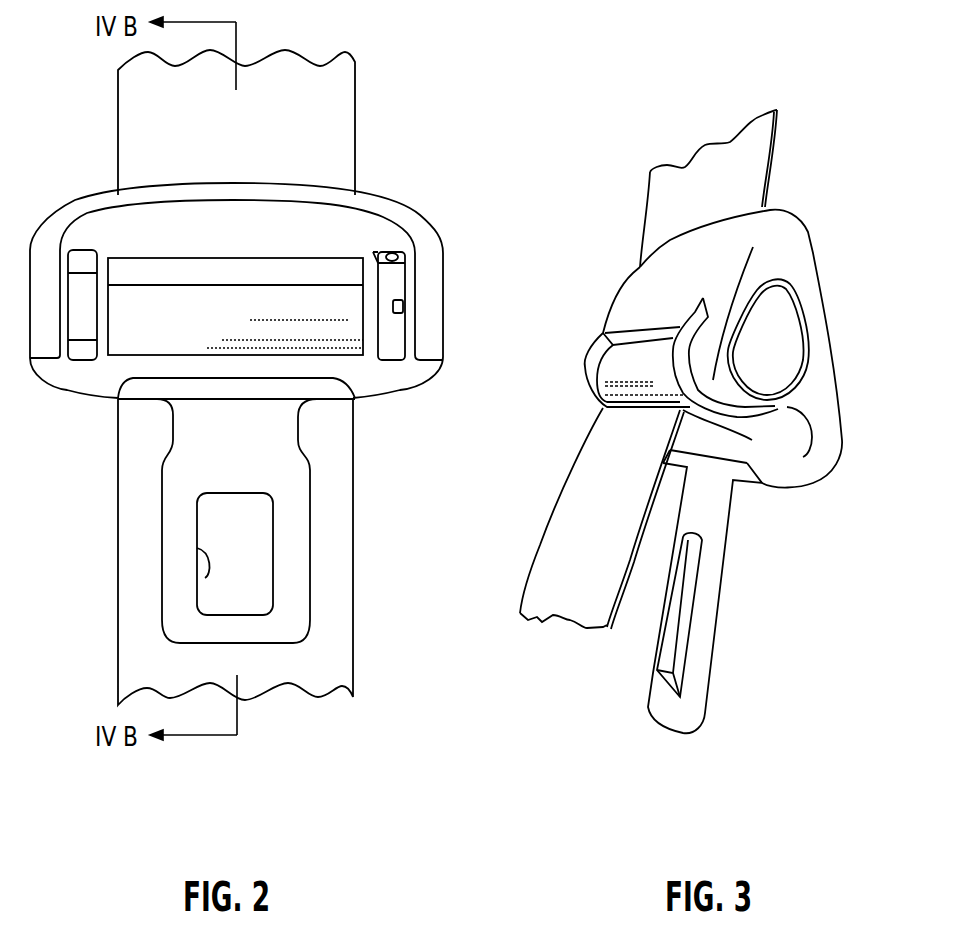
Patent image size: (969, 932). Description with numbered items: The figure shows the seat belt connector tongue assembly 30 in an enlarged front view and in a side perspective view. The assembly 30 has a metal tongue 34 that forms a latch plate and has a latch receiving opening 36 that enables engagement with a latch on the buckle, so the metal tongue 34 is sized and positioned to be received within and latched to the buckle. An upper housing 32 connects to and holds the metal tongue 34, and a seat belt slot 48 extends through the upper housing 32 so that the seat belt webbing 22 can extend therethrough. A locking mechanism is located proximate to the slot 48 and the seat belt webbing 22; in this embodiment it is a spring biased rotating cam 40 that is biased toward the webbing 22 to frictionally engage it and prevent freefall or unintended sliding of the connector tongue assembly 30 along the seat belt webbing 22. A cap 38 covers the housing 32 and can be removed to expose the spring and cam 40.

In FIG. 2, the seat belt webbing 22 is at (333, 90).
In FIG. 3, the seat belt webbing 22 is at (720, 160).
In FIG. 2, the seat belt connector tongue assembly 30 is at (397, 188).
In FIG. 3, the seat belt connector tongue assembly 30 is at (807, 152).
In FIG. 2, the upper housing 32 is at (148, 197).
In FIG. 3, the upper housing 32 is at (782, 248).
In FIG. 2, the metal tongue 34 is at (198, 463).
In FIG. 3, the metal tongue 34 is at (672, 705).
In FIG. 2, the latch receiving opening 36 is at (205, 578).
In FIG. 3, the latch receiving opening 36 is at (688, 615).
In FIG. 3, the cap 38 is at (777, 347).
In FIG. 2, the rotating cam 40 is at (150, 292).
In FIG. 3, the rotating cam 40 is at (620, 363).
In FIG. 3, the seat belt slot 48 is at (683, 445).